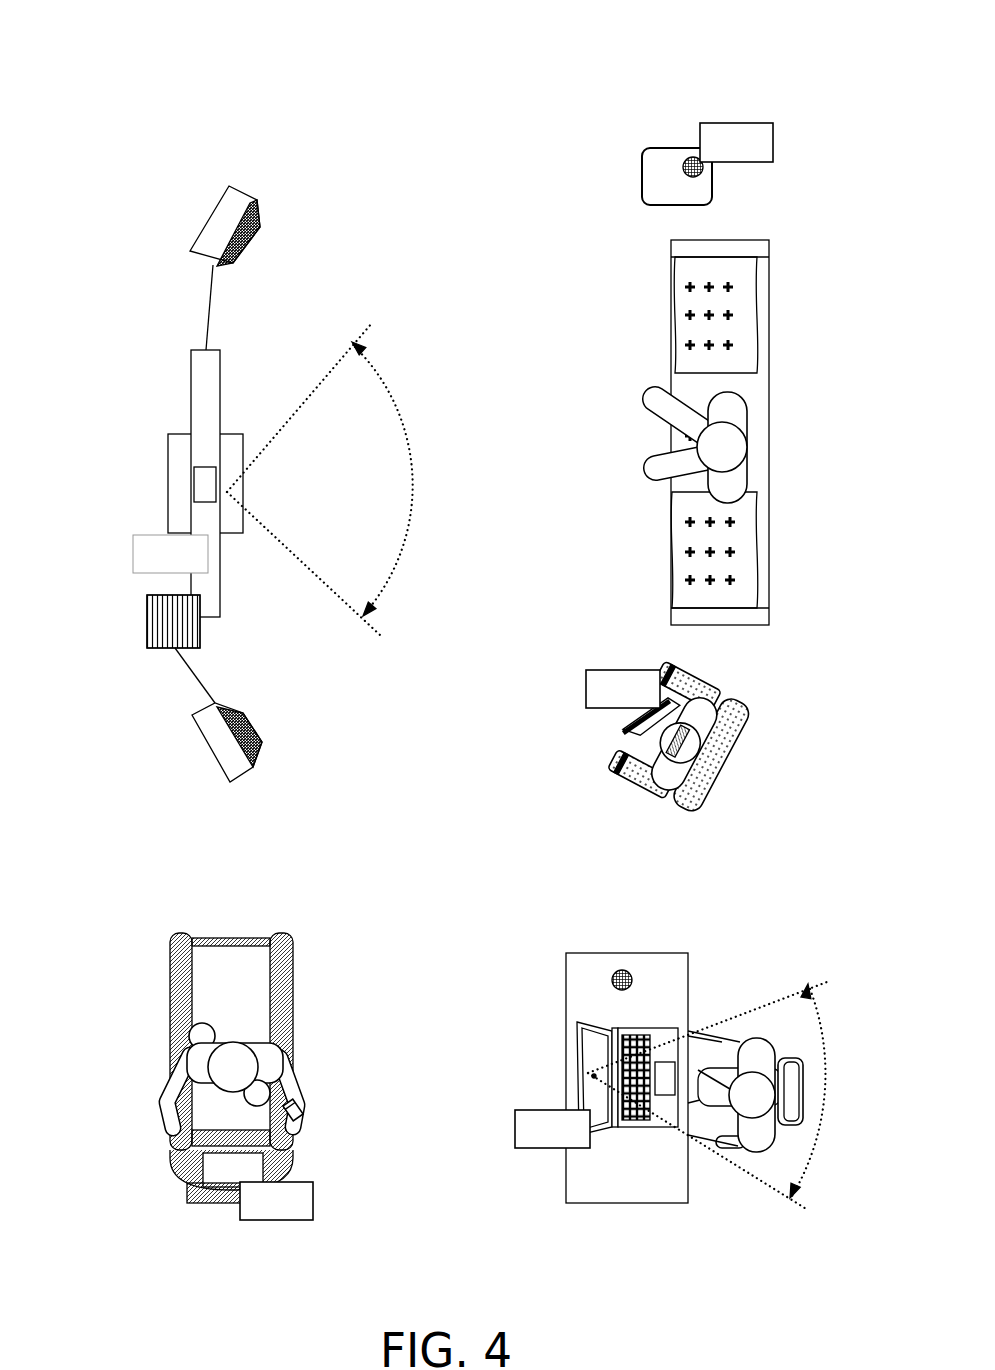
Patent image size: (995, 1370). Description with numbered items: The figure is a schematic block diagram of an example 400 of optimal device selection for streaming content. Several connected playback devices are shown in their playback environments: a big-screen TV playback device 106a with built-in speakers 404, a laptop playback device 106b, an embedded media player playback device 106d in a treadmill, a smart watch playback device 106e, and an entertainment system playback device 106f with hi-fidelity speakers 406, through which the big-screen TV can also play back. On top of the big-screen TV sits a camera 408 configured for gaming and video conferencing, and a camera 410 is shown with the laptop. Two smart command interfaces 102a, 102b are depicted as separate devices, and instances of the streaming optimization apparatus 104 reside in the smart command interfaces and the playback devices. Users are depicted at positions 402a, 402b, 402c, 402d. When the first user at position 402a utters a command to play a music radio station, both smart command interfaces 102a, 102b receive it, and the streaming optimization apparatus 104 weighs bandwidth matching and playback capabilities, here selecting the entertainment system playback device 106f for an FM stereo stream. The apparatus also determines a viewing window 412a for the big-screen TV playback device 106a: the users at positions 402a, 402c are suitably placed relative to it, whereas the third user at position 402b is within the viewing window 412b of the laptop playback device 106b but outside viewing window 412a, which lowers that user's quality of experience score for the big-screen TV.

The example of optimal device selection 400 is at (74, 43).
The smart command interface 102a is at (685, 165).
The smart command interface 102b is at (636, 978).
The streaming optimization apparatus 104 is at (453, 671).
The playback device 106a is at (155, 471).
The playback device 106b is at (564, 1054).
The playback device 106d is at (232, 1178).
The playback device 106e is at (305, 1112).
The playback device 106f is at (147, 620).
The position 402a is at (735, 447).
The position 402b is at (757, 1097).
The position 402c is at (720, 737).
The position 402d is at (250, 1087).
The built-in speakers 404 is at (222, 376).
The hi-fidelity speakers 406 is at (203, 232).
The camera 408 is at (205, 488).
The camera 410 is at (583, 1076).
The viewing window 412a is at (322, 479).
The viewing window 412b is at (715, 1096).